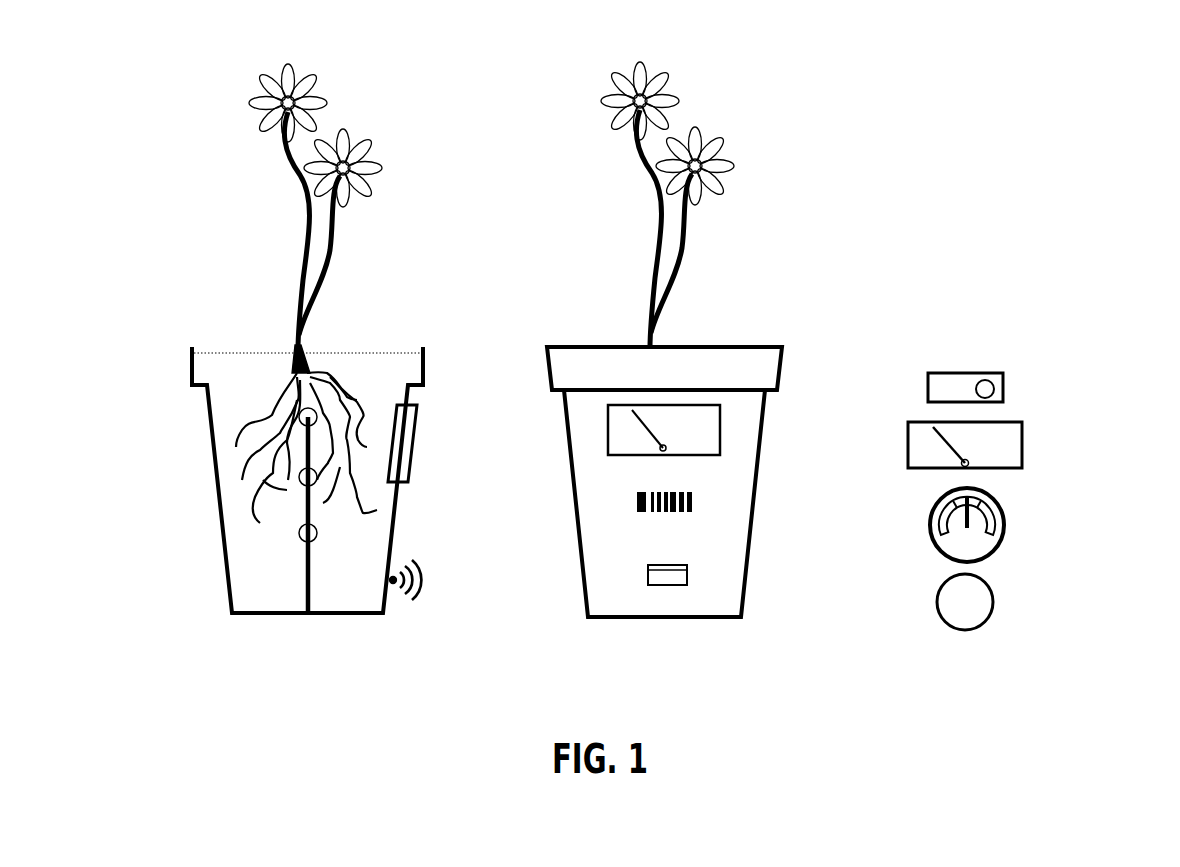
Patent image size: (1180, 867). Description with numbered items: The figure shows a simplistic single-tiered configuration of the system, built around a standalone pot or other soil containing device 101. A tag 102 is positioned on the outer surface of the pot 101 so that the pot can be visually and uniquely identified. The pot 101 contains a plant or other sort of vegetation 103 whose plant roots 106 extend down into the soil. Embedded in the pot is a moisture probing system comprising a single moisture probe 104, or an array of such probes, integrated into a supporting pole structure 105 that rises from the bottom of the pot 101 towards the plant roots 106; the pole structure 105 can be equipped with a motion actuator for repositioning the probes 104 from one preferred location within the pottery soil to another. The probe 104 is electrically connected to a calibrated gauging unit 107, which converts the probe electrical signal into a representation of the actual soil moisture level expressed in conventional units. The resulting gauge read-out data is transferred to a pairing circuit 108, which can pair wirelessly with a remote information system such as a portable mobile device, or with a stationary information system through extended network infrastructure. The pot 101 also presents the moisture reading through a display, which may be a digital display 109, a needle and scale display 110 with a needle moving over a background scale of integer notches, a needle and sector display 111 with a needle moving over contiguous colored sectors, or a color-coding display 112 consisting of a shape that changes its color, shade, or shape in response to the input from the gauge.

The pot 101 is at (207, 437).
The tag 102 is at (633, 497).
The plant 103 is at (310, 213).
The moisture probe 104 is at (299, 530).
The supporting pole structure 105 is at (305, 583).
The plant roots 106 is at (293, 400).
The calibrated gauging unit 107 is at (412, 443).
The pairing circuit 108 is at (395, 585).
The digital display 109 is at (1005, 387).
The needle and scale display 110 is at (722, 430).
The needle and sector display 111 is at (1002, 532).
The color-coding display 112 is at (995, 600).